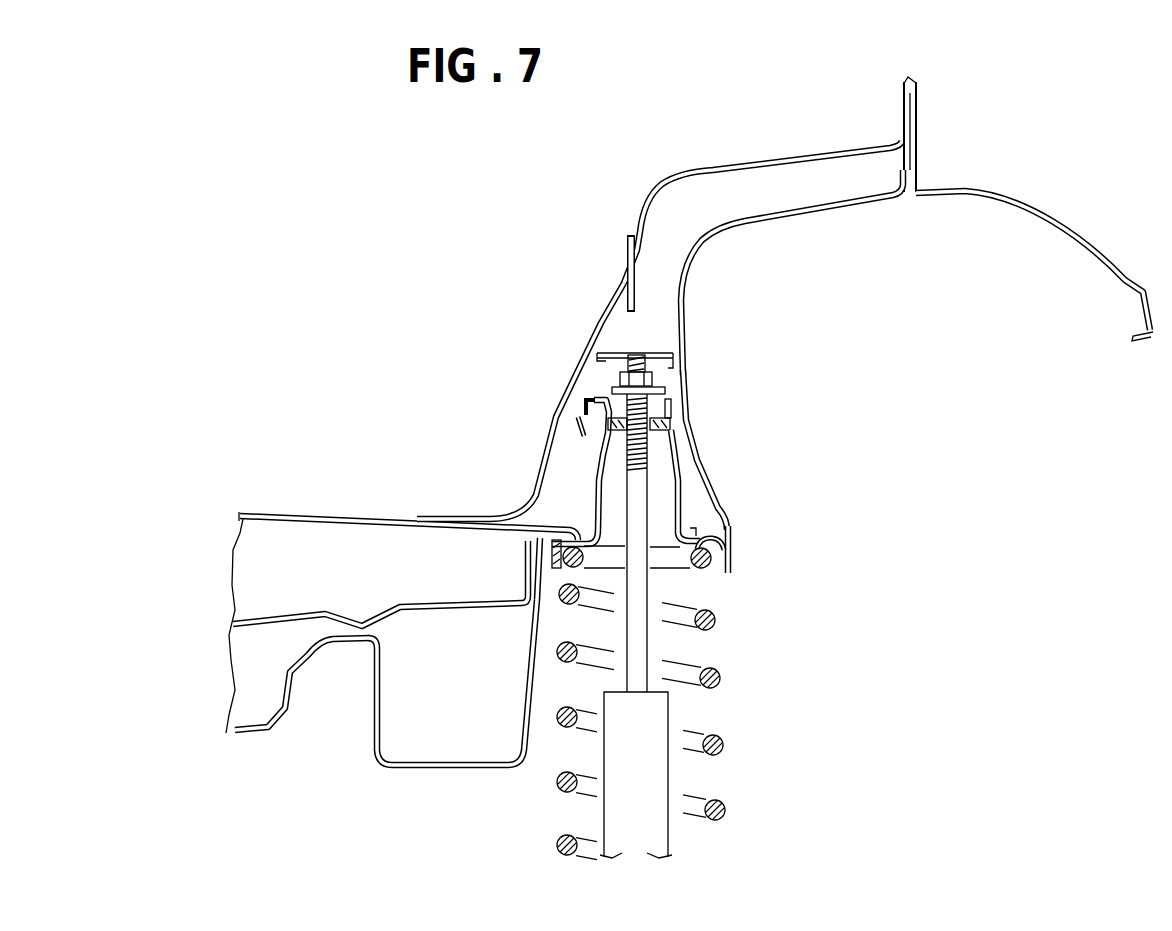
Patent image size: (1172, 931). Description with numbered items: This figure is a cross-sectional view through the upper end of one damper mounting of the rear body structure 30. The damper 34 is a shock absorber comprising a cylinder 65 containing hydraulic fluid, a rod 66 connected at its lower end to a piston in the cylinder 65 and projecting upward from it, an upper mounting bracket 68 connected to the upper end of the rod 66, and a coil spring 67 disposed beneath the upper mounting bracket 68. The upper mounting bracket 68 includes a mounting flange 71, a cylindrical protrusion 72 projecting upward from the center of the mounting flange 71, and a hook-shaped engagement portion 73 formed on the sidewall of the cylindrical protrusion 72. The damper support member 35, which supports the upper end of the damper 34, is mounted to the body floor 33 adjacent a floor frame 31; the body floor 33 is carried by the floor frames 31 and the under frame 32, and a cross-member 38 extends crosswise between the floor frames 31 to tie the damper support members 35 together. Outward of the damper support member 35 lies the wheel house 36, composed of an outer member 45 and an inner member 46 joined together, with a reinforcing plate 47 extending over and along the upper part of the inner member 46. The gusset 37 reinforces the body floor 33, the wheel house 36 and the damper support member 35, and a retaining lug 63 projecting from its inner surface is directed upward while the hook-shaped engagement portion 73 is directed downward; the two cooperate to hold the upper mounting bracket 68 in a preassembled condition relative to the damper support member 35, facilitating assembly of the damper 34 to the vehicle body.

The rear body structure 30 is at (347, 147).
The floor frame 31 is at (411, 766).
The under frame 32 is at (252, 728).
The body floor 33 is at (400, 604).
The damper 34 is at (745, 780).
The damper support member 35 is at (723, 526).
The wheel house 36 is at (960, 168).
The gusset 37 is at (541, 452).
The cross-member 38 is at (255, 515).
The outer member 45 is at (1007, 193).
The inner member 46 is at (777, 214).
The reinforcing plate 47 is at (705, 170).
The retaining lug 63 is at (557, 443).
The cylinder 65 is at (656, 731).
The rod 66 is at (637, 664).
The coil spring 67 is at (724, 742).
The upper mounting bracket 68 is at (690, 488).
The mounting flange 71 is at (720, 548).
The cylindrical protrusion 72 is at (684, 456).
The hook-shaped engagement portion 73 is at (567, 397).